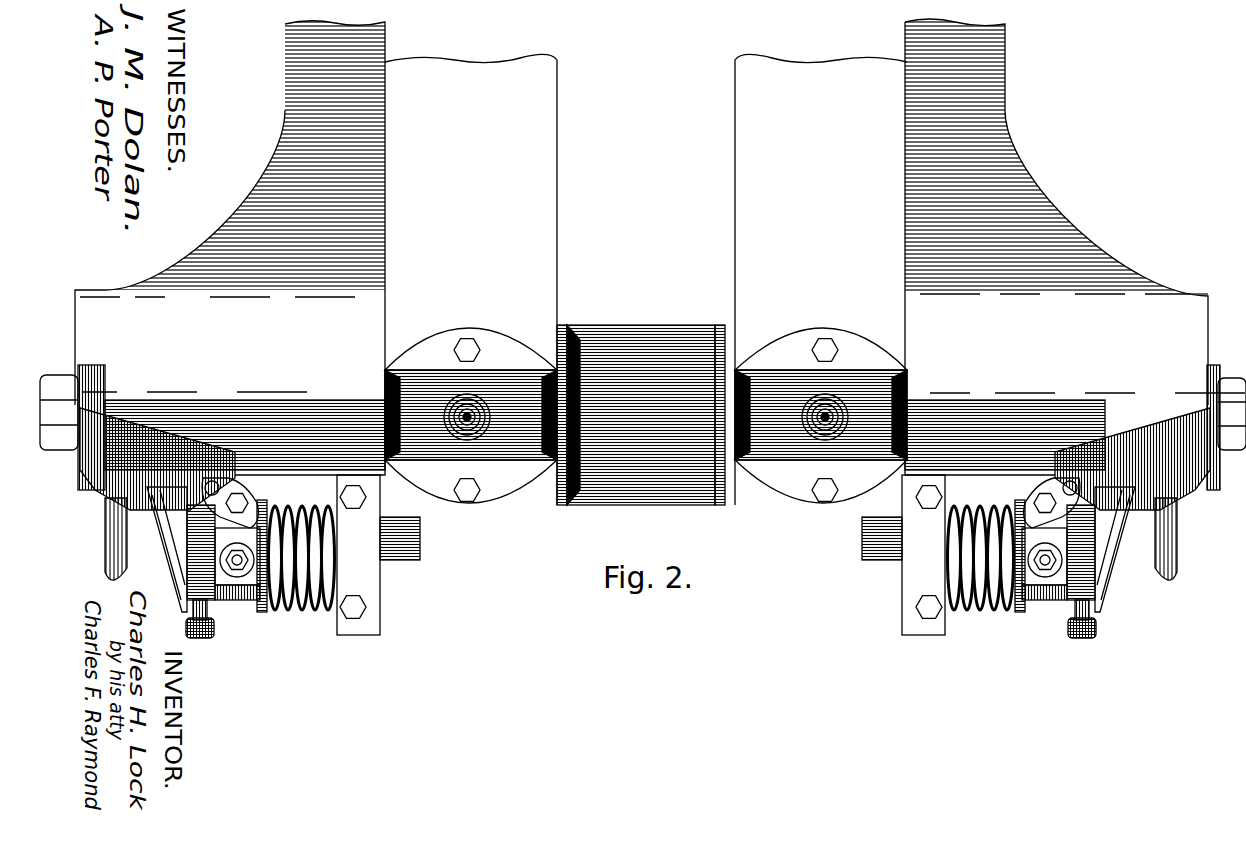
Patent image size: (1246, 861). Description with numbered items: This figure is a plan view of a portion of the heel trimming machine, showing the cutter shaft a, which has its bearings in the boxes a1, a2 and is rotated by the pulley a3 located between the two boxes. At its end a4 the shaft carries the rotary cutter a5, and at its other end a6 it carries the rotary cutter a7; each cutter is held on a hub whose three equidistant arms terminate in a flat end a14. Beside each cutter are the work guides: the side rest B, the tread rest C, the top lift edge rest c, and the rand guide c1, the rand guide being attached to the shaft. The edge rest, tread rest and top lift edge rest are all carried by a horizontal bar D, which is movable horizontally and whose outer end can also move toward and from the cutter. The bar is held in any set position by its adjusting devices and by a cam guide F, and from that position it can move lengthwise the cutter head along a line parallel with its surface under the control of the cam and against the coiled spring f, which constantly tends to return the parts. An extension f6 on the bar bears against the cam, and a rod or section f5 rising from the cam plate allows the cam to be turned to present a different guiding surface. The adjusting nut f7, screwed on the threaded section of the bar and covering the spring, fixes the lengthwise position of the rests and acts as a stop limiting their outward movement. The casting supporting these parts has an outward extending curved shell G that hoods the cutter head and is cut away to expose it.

The shaft a is at (515, 433).
The box a1 is at (773, 340).
The box a2 is at (486, 382).
The pulley a3 is at (628, 342).
The shaft end a4 is at (52, 410).
The rotary cutter a5 is at (112, 450).
The shaft end a6 is at (1208, 400).
The rotary cutter a7 is at (1153, 453).
The flat end a14 is at (214, 624).
The side rest B is at (108, 528).
The tread rest C is at (170, 552).
The top lift edge rest c is at (80, 452).
The rand guide c1 is at (1203, 490).
The bar D is at (857, 550).
The cam guide F is at (641, 503).
The spring f is at (302, 512).
The rod or section f5 is at (211, 485).
The extension f6 is at (641, 550).
The adjusting nut f7 is at (975, 578).
The curved shell G is at (221, 412).